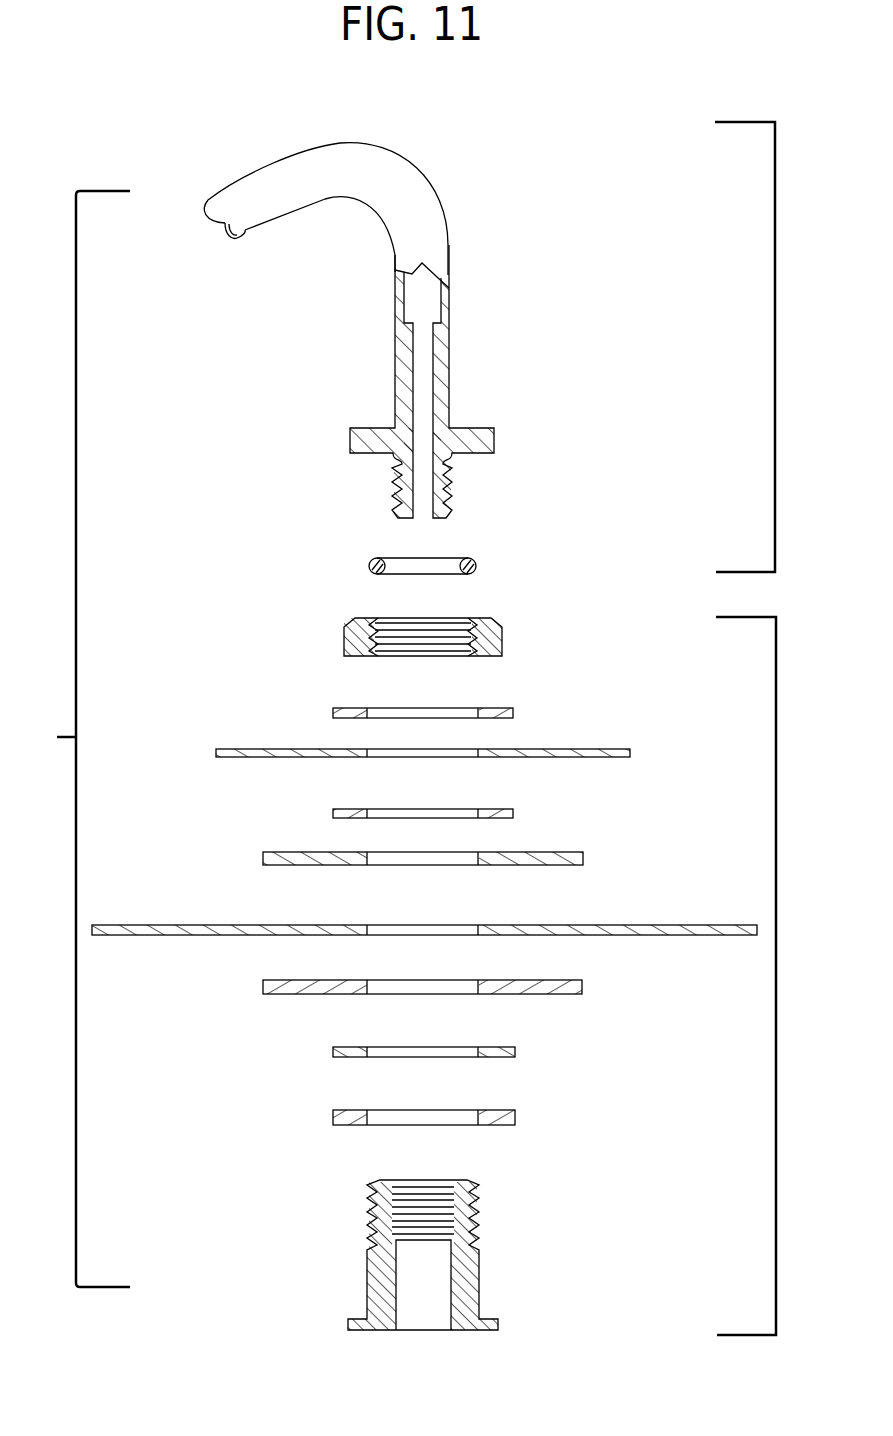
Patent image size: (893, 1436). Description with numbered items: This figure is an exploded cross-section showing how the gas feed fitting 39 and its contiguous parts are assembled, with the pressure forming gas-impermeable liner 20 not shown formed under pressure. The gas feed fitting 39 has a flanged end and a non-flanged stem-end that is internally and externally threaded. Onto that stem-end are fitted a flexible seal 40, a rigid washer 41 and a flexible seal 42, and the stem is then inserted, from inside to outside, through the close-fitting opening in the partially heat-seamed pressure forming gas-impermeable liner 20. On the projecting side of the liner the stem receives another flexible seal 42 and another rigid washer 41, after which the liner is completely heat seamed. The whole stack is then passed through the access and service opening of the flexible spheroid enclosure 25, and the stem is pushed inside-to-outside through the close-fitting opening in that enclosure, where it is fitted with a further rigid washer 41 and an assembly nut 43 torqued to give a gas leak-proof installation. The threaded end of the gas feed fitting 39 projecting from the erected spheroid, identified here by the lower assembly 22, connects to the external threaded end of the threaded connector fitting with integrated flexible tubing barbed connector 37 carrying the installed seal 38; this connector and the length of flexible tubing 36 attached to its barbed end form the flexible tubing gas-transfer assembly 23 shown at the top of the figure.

The pressure forming gas-impermeable liner 20 is at (155, 925).
The lower faucet assembly 22 is at (253, 1225).
The flexible tubing gas-transfer assembly 23 is at (503, 256).
The flexible spheroid enclosure 25 is at (255, 749).
The flexible tubing 36 is at (347, 218).
The threaded connector fitting with integrated flexible tubing barbed connector 37 is at (494, 440).
The seal 38 is at (477, 563).
The gas feed fitting 39 is at (367, 1300).
The flexible seal 40 is at (333, 1118).
The rigid washer 41 is at (513, 713).
The flexible seal 42 is at (263, 858).
The assembly nut 43 is at (344, 633).